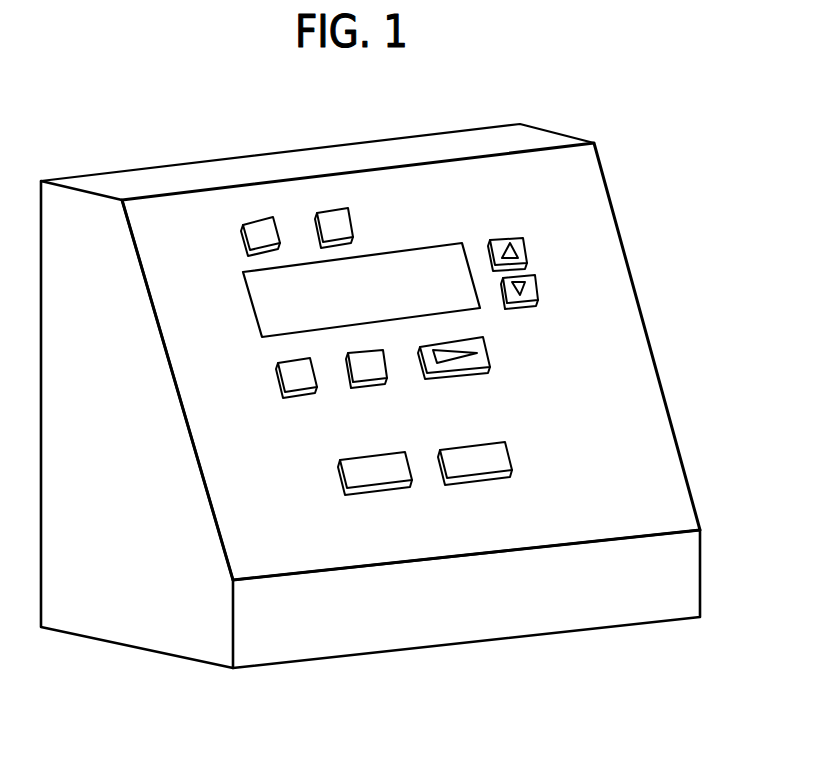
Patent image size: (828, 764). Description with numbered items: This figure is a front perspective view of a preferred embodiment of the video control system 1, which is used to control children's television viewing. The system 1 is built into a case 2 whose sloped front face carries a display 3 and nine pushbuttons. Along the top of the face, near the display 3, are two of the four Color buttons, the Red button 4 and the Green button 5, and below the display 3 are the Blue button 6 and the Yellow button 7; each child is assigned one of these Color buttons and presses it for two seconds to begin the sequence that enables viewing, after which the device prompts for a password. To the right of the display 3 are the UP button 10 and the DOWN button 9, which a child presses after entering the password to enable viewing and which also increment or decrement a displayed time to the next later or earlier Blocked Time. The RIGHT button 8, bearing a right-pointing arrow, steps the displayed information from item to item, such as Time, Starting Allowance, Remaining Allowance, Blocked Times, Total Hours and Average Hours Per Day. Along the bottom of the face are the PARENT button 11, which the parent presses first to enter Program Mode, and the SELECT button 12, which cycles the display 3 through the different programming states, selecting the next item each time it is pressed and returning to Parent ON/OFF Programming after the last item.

The video control system 1 is at (692, 396).
The case 2 is at (673, 488).
The display 3 is at (420, 268).
The Red button 4 is at (250, 232).
The Green button 5 is at (353, 223).
The Blue button 6 is at (278, 375).
The Yellow button 7 is at (368, 372).
The RIGHT button 8 is at (482, 357).
The DOWN button 9 is at (537, 292).
The UP button 10 is at (525, 246).
The PARENT button 11 is at (398, 486).
The SELECT button 12 is at (497, 472).